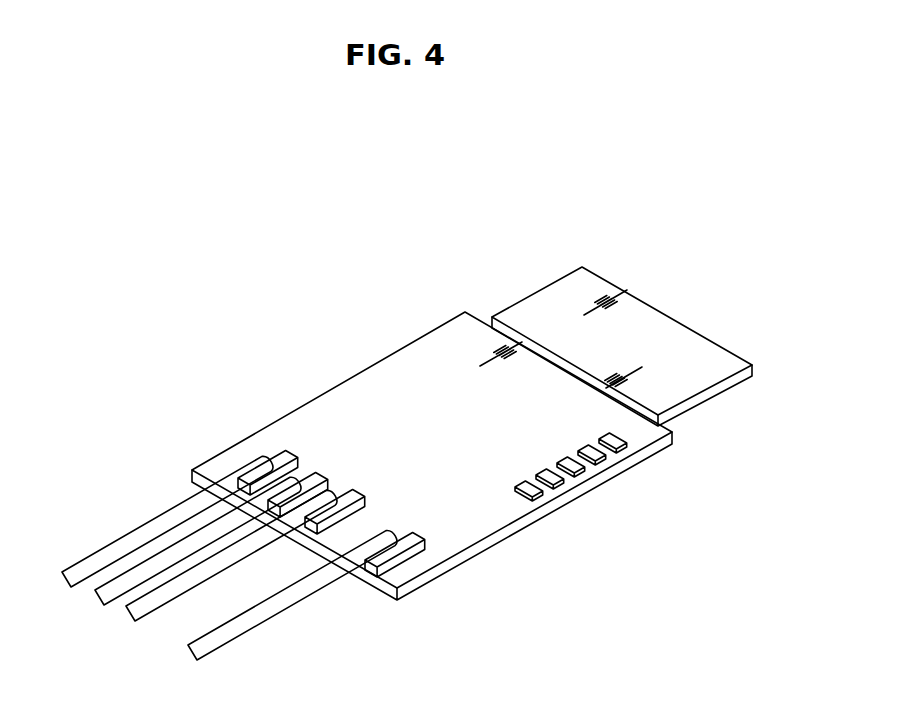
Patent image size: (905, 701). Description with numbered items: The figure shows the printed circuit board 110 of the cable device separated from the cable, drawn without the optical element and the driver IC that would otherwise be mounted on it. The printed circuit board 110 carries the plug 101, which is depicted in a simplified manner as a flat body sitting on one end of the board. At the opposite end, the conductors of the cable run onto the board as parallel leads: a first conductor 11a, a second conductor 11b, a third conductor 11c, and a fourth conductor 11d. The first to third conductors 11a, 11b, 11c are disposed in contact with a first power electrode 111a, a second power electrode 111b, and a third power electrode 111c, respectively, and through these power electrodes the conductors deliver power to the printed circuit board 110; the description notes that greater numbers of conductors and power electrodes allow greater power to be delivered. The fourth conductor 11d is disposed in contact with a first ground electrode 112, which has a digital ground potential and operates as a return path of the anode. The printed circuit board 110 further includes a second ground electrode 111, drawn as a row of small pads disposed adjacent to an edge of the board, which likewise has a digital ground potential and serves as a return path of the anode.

The printed circuit board 110 is at (448, 580).
The plug 101 is at (664, 330).
The second ground electrode 111 is at (618, 453).
The first power electrode 111a is at (268, 457).
The second power electrode 111b is at (290, 486).
The third power electrode 111c is at (340, 503).
The first ground electrode 112 is at (403, 537).
The first conductor 11a is at (105, 556).
The second conductor 11b is at (98, 597).
The third conductor 11c is at (146, 615).
The fourth conductor 11d is at (227, 632).